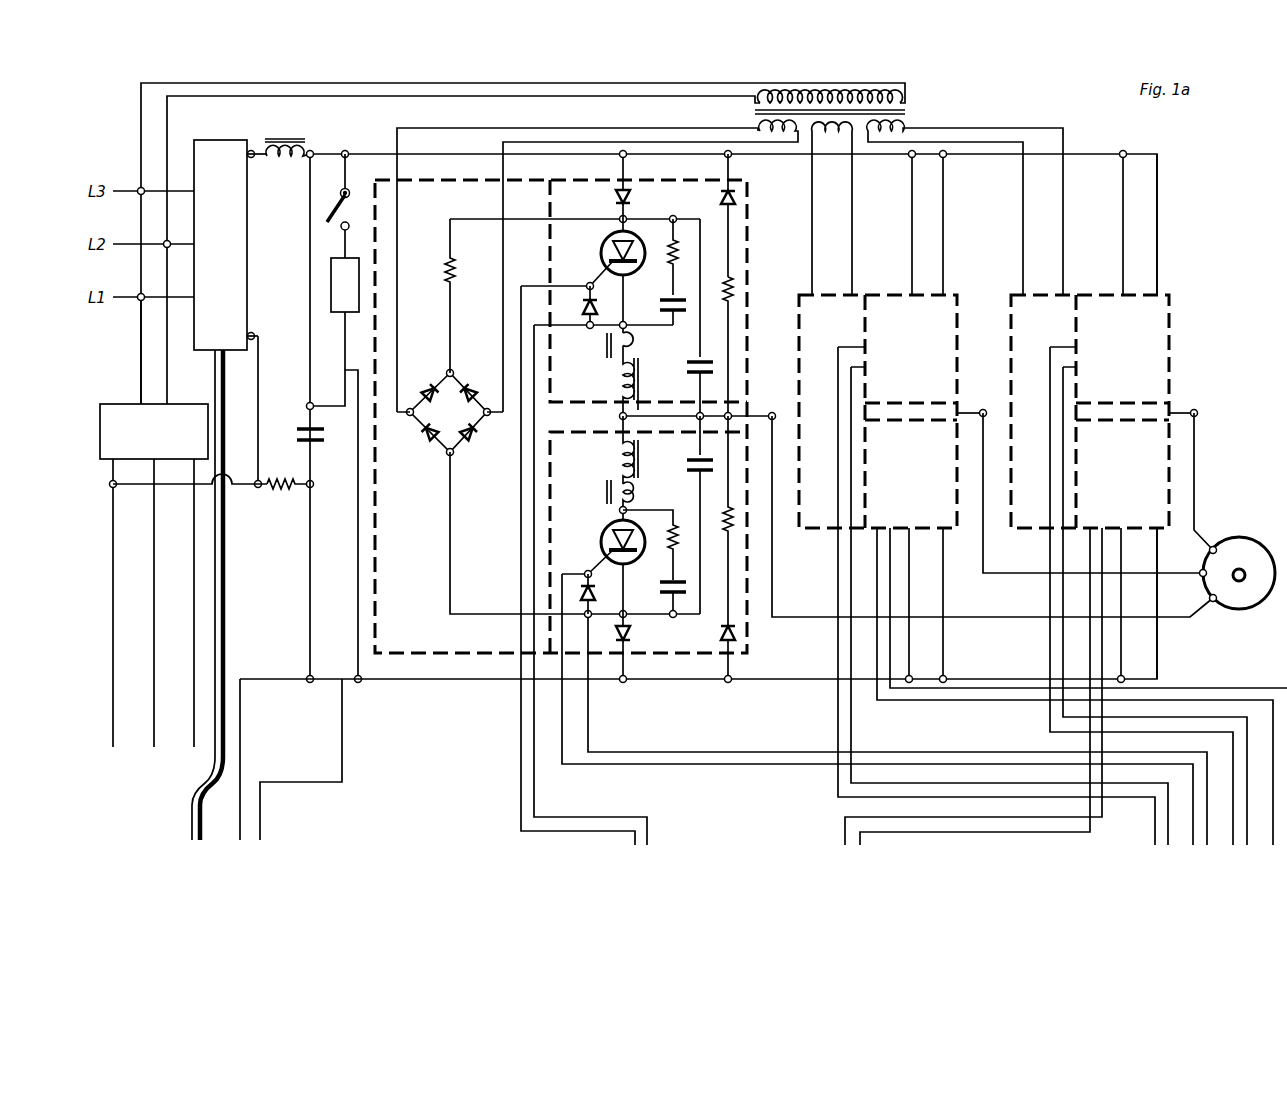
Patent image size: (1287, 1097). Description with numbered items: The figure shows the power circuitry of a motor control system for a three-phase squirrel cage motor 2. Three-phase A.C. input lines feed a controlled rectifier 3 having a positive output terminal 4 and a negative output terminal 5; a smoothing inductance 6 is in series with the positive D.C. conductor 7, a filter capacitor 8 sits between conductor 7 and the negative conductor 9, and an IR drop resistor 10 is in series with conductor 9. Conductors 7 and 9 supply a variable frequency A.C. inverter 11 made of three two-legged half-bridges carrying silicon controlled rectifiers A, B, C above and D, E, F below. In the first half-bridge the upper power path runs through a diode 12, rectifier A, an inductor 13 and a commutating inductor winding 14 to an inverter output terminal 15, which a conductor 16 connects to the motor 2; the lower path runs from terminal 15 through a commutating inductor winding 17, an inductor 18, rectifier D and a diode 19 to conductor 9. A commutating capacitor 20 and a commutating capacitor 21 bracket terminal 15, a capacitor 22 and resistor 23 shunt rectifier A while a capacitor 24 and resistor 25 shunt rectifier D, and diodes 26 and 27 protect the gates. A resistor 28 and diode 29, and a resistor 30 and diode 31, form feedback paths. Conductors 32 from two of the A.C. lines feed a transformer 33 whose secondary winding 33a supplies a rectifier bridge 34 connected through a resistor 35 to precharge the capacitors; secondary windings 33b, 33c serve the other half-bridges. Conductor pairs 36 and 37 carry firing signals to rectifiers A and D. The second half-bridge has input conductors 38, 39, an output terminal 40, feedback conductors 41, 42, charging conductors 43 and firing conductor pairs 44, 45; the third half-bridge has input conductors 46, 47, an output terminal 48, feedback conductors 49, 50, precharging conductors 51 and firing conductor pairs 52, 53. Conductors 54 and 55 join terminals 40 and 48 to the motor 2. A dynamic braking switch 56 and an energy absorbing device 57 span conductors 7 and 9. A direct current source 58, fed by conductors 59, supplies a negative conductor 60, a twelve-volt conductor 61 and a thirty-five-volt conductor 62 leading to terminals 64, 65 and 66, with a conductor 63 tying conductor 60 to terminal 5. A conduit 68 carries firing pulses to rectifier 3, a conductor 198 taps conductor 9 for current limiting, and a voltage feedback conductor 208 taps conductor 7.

The three-phase squirrel cage motor 2 is at (1240, 538).
The controlled rectifier 3 is at (214, 140).
The positive output terminal 4 is at (253, 150).
The negative output terminal 5 is at (253, 334).
The smoothing inductance 6 is at (290, 138).
The positive D.C. conductor 7 is at (395, 128).
The filter capacitor 8 is at (296, 436).
The negative conductor 9 is at (419, 682).
The IR drop resistor 10 is at (286, 490).
The variable frequency A.C. inverter 11 is at (581, 407).
The unidirectional conducting diode 12 is at (630, 197).
The inductor 13 is at (604, 345).
The commutating inductor winding 14 is at (615, 386).
The inverter output terminal 15 is at (772, 410).
The conductor 16 is at (774, 612).
The commutating inductor winding 17 is at (615, 461).
The inductor 18 is at (604, 491).
The unidirectional conducting diode 19 is at (631, 633).
The commutating capacitor 20 is at (696, 364).
The commutating capacitor 21 is at (692, 463).
The capacitor 22 is at (665, 303).
The resistor 23 is at (668, 247).
The capacitor 24 is at (666, 587).
The resistor 25 is at (673, 516).
The diode 26 is at (583, 307).
The diode 27 is at (583, 584).
The resistor 28 is at (738, 277).
The diode 29 is at (721, 197).
The resistor 30 is at (727, 533).
The diode 31 is at (721, 633).
The conductors 32 is at (497, 83).
The transformer 33 is at (910, 106).
The secondary winding 33a is at (758, 130).
The secondary winding 33b is at (837, 134).
The secondary winding 33c is at (905, 128).
The rectifier bridge 34 is at (450, 411).
The resistor 35 is at (456, 270).
The conductors 36 is at (519, 765).
The conductors 37 is at (629, 763).
The input conductor 38 is at (911, 250).
The input conductor 39 is at (911, 582).
The output terminal 40 is at (983, 406).
The feedback conductor 41 is at (944, 226).
The feedback conductor 42 is at (944, 572).
The bridge charging current conductors 43 is at (814, 214).
The conductor pair 44 is at (836, 726).
The conductor pair 45 is at (962, 702).
The input conductor 46 is at (1122, 250).
The input conductor 47 is at (1123, 572).
The output terminal 48 is at (1194, 406).
The feedback conductor 49 is at (1158, 218).
The feedback conductor 50 is at (1160, 612).
The precharging current conductors 51 is at (1024, 214).
The conductor pair 52 is at (1060, 672).
The conductor pair 53 is at (1100, 650).
The conductor 54 is at (1022, 575).
The conductor 55 is at (1196, 492).
The dynamic braking switch 56 is at (343, 193).
The electrical energy absorbing device 57 is at (341, 258).
The direct current source 58 is at (154, 431).
The conductors 59 is at (165, 378).
The negative conductor 60 is at (112, 516).
The positive 12-volt conductor 61 is at (152, 527).
The positive 35-volt conductor 62 is at (192, 537).
The conductor 63 is at (257, 437).
The terminal 64 is at (110, 649).
The terminal 65 is at (150, 649).
The terminal 66 is at (190, 649).
The conduit 68 is at (226, 556).
The conductor 198 is at (262, 677).
The voltage feedback conductor 208 is at (292, 781).